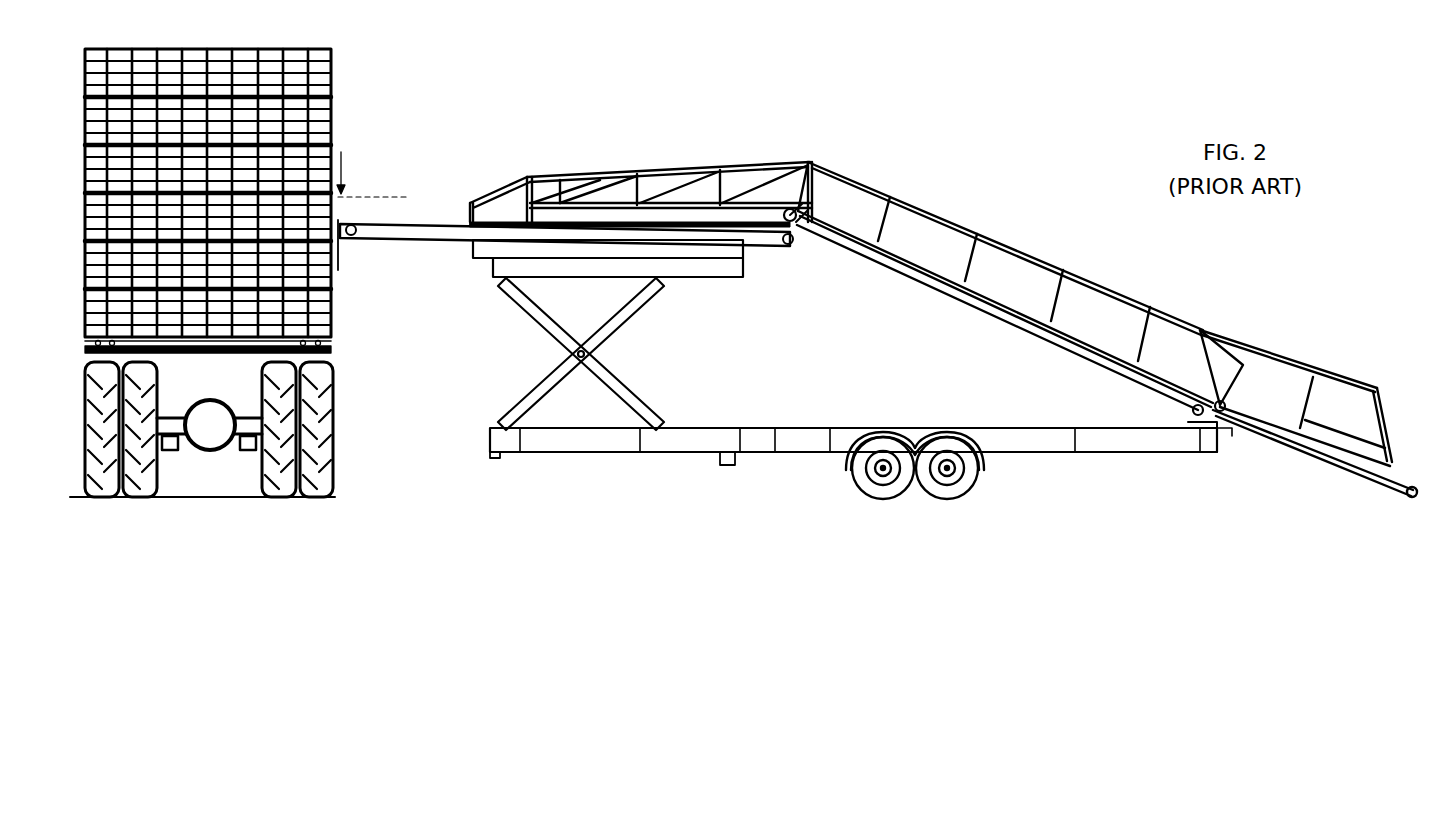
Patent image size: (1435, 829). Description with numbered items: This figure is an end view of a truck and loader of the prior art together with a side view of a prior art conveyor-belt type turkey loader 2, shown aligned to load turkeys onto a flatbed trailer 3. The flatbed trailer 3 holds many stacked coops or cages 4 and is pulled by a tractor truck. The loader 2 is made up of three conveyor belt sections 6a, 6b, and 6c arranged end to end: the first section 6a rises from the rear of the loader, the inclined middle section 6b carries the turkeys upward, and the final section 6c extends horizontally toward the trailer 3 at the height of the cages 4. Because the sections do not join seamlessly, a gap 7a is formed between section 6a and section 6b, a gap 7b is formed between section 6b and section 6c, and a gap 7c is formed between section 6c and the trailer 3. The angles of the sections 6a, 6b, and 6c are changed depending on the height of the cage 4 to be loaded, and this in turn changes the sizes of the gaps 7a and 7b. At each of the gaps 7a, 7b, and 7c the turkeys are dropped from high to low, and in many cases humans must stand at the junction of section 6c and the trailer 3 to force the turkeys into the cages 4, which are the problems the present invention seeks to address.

The conveyor-belt type turkey loader 2 is at (918, 160).
The flatbed trailer 3 is at (335, 347).
The stacked coops or cages 4 is at (96, 84).
The conveyor belt section 6a is at (1332, 458).
The conveyor belt section 6b is at (916, 282).
The conveyor belt section 6c is at (786, 252).
The gap 7a is at (1227, 440).
The gap 7b is at (760, 218).
The gap 7c is at (364, 181).